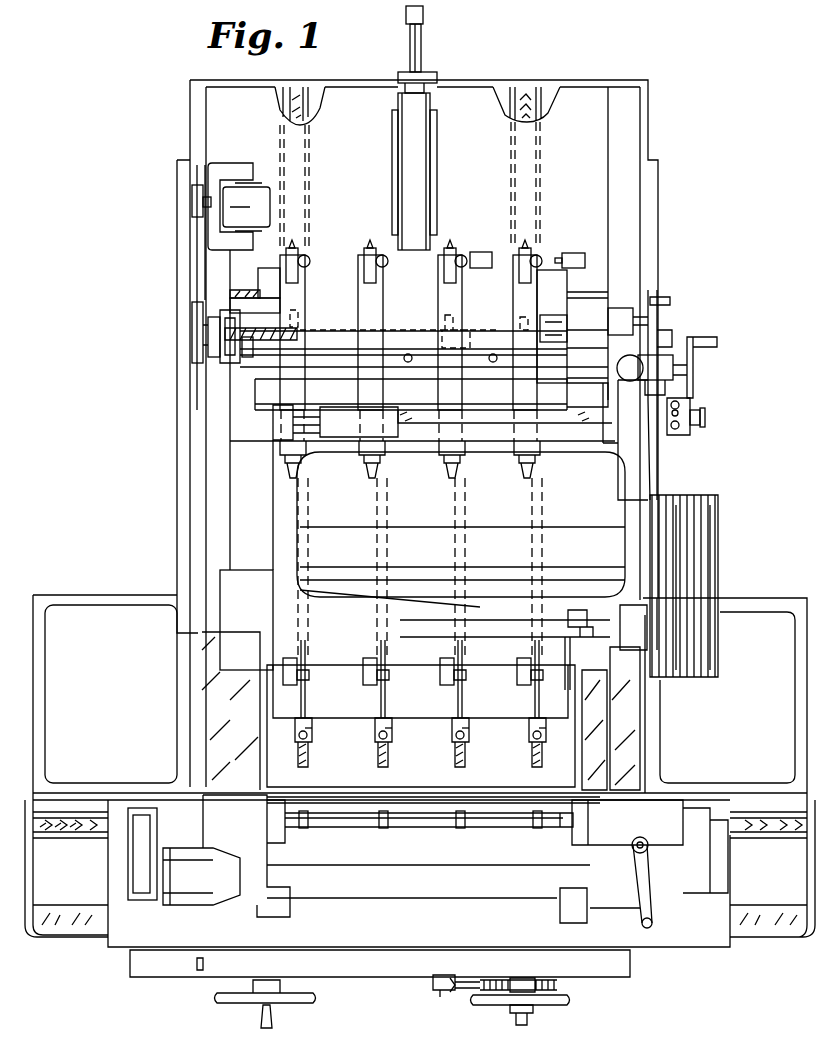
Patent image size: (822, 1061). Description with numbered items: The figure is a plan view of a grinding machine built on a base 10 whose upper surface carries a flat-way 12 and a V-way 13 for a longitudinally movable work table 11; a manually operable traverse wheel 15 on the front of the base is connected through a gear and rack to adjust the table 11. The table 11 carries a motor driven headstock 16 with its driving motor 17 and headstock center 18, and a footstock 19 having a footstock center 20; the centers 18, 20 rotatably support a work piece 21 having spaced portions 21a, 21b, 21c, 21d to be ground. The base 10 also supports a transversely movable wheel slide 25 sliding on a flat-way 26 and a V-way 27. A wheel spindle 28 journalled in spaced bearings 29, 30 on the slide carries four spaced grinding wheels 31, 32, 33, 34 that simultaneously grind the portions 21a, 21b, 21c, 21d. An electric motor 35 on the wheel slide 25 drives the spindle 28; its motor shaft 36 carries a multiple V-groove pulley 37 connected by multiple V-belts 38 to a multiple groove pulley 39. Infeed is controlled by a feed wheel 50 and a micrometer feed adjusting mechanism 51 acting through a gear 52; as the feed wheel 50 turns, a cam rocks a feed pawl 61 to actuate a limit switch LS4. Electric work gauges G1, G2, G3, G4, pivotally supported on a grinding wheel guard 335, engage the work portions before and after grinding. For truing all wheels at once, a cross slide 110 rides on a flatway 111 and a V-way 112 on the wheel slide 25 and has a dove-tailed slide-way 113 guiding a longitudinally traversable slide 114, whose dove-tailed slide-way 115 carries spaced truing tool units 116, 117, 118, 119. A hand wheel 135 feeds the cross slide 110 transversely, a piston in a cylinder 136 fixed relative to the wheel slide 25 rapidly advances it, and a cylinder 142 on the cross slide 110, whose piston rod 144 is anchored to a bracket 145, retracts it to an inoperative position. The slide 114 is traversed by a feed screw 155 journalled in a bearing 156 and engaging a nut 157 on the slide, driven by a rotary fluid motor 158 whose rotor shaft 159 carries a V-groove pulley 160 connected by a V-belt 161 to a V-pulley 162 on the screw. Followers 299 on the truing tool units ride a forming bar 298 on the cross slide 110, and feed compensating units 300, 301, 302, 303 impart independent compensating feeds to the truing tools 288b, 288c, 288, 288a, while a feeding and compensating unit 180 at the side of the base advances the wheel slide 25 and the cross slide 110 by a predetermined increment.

The cross slide 110 is at (590, 162).
The flatway 111 is at (296, 100).
The V-way 112 is at (526, 95).
The cylinder 142 is at (412, 136).
The cylinder 136 is at (425, 86).
The piston rod 144 is at (416, 47).
The bracket 145 is at (406, 14).
The wheel slide 25 is at (188, 470).
The V-belt 161 is at (200, 238).
The rotary type fluid motor 158 is at (243, 186).
The rotor shaft 159 is at (197, 190).
The V-groove pulley 160 is at (204, 198).
The dove-tailed slide-way 115 is at (421, 410).
The longitudinally traversable slide 114 is at (265, 285).
The dove-tailed slide-way 113 is at (235, 294).
The V-pulley 162 is at (193, 320).
The bearing 156 is at (212, 356).
The feed screw 155 is at (228, 362).
The nut 157 is at (250, 360).
The truing tool unit 116 is at (312, 288).
The truing tool unit 117 is at (391, 298).
The truing tool unit 118 is at (431, 303).
The truing tool unit 119 is at (506, 295).
The feed compensating unit 300 is at (305, 245).
The feed compensating unit 301 is at (376, 243).
The feed compensating unit 302 is at (465, 248).
The feed compensating unit 303 is at (542, 247).
The followers 299 is at (438, 325).
The forming bar 298 is at (462, 335).
The hand wheel 135 is at (652, 308).
The motor shaft 36 is at (645, 490).
The feeding and compensating unit 180 is at (695, 424).
The electric motor 35 is at (610, 465).
The truing tool 288b is at (290, 480).
The truing tool 288c is at (370, 480).
The truing tool 288 is at (450, 480).
The truing tool 288a is at (522, 480).
The multiple V-groove pulley 37 is at (718, 508).
The multiple V-belts 38 is at (705, 556).
The multiple groove pulley 39 is at (718, 592).
The bearing 29 is at (237, 600).
The grinding wheel guard 335 is at (481, 647).
The flat-way 26 is at (213, 688).
The V-way 27 is at (628, 760).
The wheel spindle 28 is at (650, 680).
The bearing 30 is at (625, 705).
The grinding wheel 31 is at (298, 755).
The grinding wheel 32 is at (378, 755).
The grinding wheel 33 is at (456, 755).
The grinding wheel 34 is at (533, 755).
The electric work gauge G1 is at (312, 735).
The electric work gauge G2 is at (392, 735).
The electric work gauge G3 is at (469, 735).
The electric work gauge G4 is at (546, 735).
The base 10 is at (80, 937).
The V-way 13 is at (65, 820).
The flat-way 12 is at (60, 925).
The work table 11 is at (125, 932).
The motor driven headstock 16 is at (174, 915).
The driving motor 17 is at (220, 895).
The headstock center 18 is at (268, 822).
The work piece 21 is at (350, 832).
The spaced portion 21a is at (303, 830).
The spaced portion 21b is at (383, 830).
The spaced portion 21c is at (460, 830).
The spaced portion 21d is at (537, 830).
The footstock center 20 is at (590, 830).
The footstock 19 is at (633, 920).
The traverse wheel 15 is at (228, 1003).
The gear 52 is at (560, 988).
The micrometer feed adjusting mechanism 51 is at (505, 1005).
The feed wheel 50 is at (535, 1008).
The feed pawl 61 is at (470, 990).
The limit switch LS4 is at (433, 990).